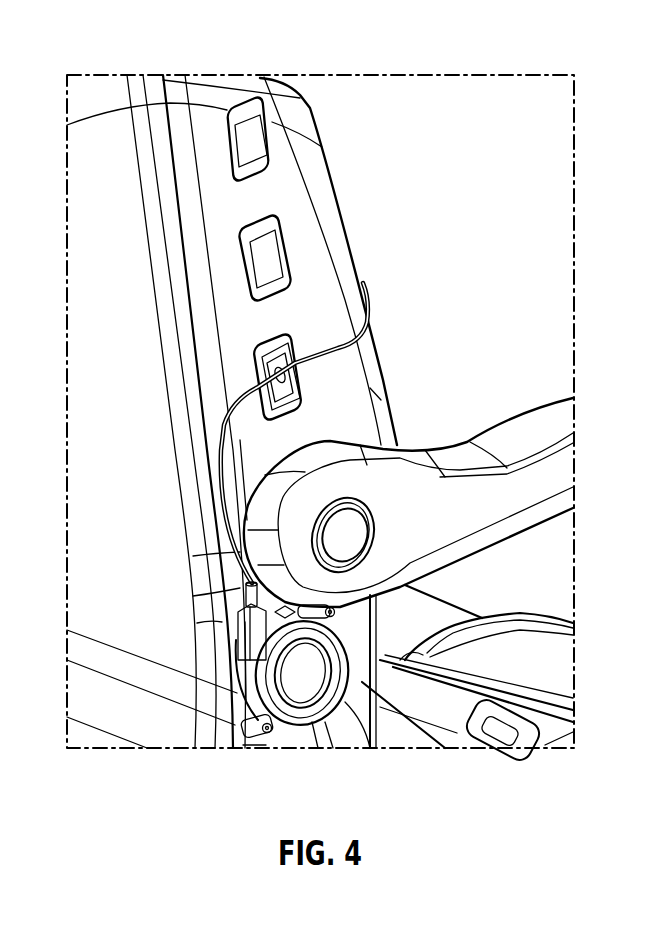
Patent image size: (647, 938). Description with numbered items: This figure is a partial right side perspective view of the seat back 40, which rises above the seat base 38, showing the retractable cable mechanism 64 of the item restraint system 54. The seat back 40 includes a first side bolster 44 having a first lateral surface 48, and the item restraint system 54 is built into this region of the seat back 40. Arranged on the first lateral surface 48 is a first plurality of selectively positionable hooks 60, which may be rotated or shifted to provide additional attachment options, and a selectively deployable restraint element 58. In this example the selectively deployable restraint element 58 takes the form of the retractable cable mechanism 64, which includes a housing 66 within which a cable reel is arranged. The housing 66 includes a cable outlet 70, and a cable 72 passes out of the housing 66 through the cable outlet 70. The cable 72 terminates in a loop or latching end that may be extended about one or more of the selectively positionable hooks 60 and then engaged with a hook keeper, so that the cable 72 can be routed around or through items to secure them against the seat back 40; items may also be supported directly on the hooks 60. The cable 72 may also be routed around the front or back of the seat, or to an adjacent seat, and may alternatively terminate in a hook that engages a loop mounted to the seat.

The seat base 38 is at (537, 607).
The seat back 40 is at (383, 342).
The first side bolster 44 is at (324, 135).
The first lateral surface 48 is at (285, 308).
The item restraint system 54 is at (448, 764).
The selectively deployable restraint element 58 is at (300, 742).
The first plurality of selectively positionable hooks 60 is at (303, 242).
The retractable cable mechanism 64 is at (337, 670).
The housing 66 is at (253, 672).
The cable outlet 70 is at (243, 590).
The cable 72 is at (237, 393).